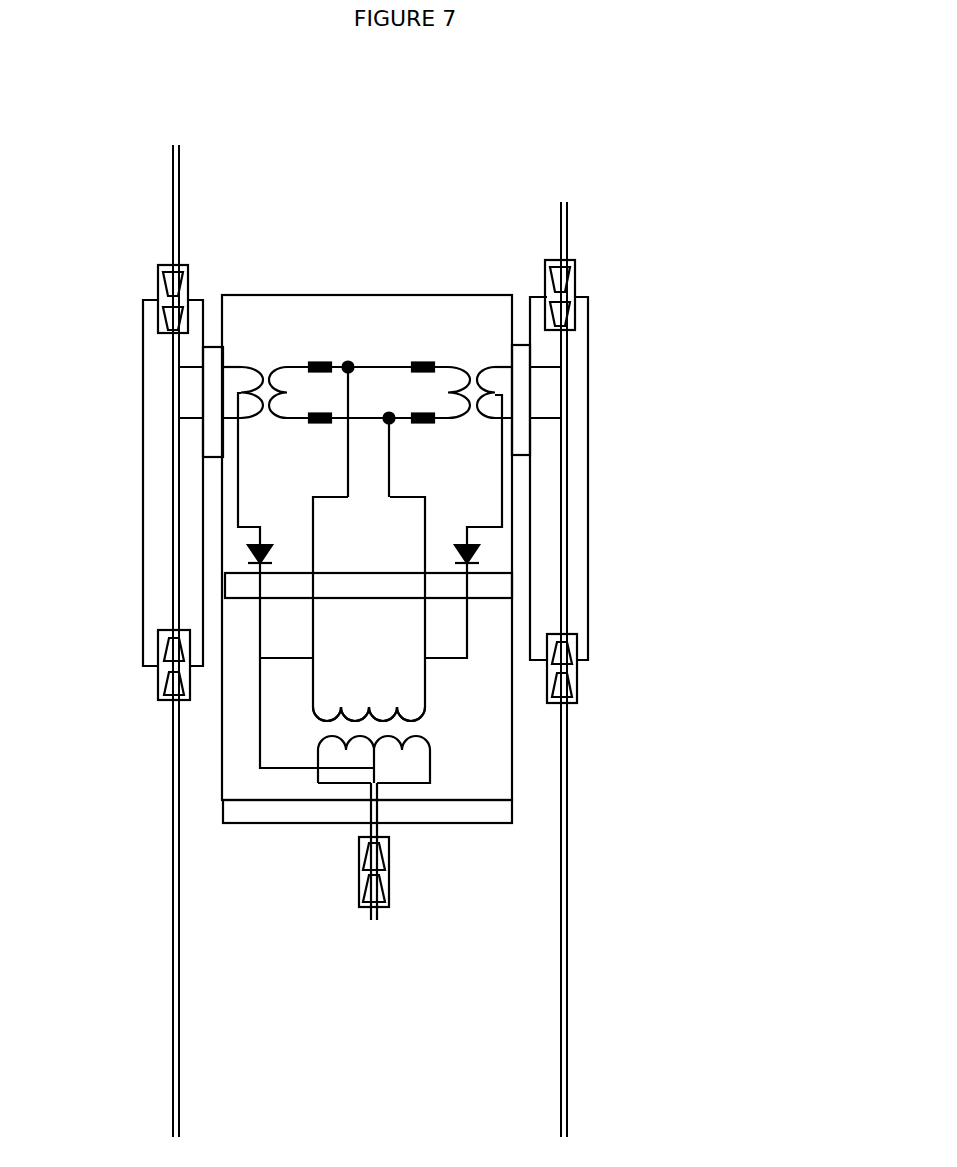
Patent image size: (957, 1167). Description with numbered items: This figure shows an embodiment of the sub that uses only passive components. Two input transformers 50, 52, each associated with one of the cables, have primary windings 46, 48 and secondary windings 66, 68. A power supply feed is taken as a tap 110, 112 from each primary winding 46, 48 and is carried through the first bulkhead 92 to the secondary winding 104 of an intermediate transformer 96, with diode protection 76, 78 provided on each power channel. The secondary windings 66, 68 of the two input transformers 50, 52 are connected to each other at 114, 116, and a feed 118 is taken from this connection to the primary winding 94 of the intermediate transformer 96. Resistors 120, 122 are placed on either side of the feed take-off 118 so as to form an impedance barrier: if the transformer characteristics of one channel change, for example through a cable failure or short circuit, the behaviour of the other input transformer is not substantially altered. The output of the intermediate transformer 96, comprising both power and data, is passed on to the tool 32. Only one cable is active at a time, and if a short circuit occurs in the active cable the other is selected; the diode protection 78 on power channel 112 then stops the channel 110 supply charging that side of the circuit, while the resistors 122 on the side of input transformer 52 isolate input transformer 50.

The tool 32 is at (345, 865).
The primary winding of first input transformer 46 is at (248, 357).
The primary winding of second input transformer 48 is at (500, 372).
The first input transformer 50 is at (260, 355).
The second input transformer 52 is at (483, 362).
The secondary winding of first input transformer 66 is at (278, 357).
The secondary winding of second input transformer 68 is at (463, 353).
The diode protection 76 is at (240, 545).
The diode protection 78 is at (493, 547).
The first bulkhead 92 is at (472, 587).
The primary winding of intermediate transformer 94 is at (310, 720).
The intermediate transformer 96 is at (452, 727).
The secondary winding of intermediate transformer 104 is at (437, 755).
The tap 110 is at (232, 441).
The tap 112 is at (505, 470).
The connection 114 is at (377, 353).
The connection 116 is at (367, 417).
The feed 118 is at (303, 543).
The resistors 120 is at (320, 403).
The resistors 122 is at (425, 397).